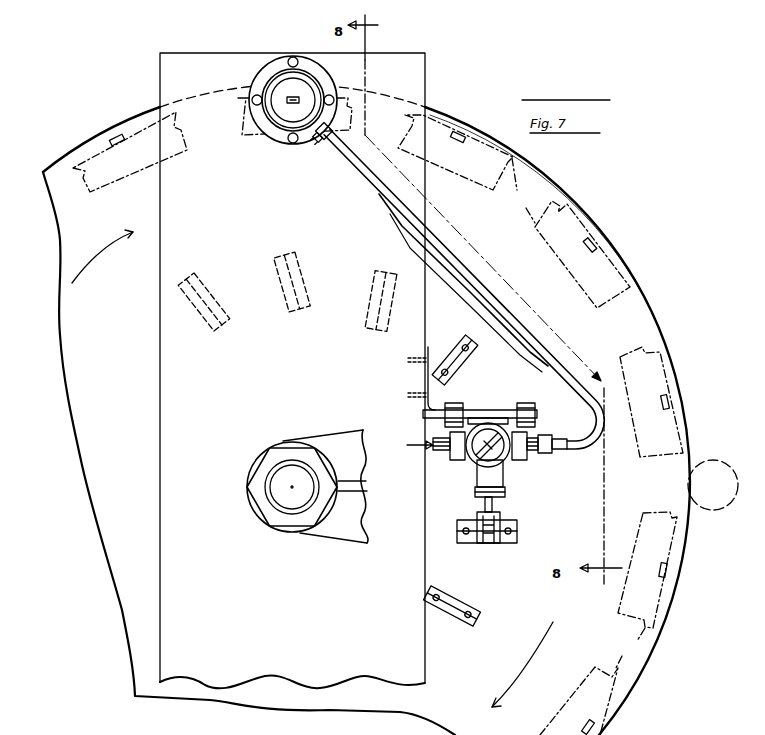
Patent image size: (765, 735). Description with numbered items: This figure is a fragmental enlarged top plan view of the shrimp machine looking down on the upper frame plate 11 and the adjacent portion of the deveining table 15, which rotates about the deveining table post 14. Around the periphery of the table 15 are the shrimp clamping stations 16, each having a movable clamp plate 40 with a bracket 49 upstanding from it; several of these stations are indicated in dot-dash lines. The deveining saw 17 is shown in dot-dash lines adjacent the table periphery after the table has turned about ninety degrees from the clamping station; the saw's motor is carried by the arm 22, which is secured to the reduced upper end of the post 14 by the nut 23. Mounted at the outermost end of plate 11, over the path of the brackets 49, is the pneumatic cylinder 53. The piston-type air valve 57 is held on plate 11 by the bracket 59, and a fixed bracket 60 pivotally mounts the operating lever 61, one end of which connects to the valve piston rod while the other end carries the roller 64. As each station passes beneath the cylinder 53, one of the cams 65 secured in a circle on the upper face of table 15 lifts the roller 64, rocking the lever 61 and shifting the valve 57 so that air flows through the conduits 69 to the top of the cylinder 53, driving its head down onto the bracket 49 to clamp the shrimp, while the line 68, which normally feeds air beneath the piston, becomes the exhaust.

The upper frame plate 11 is at (429, 62).
The deveining table post 14 is at (290, 487).
The deveining table 15 is at (545, 174).
The shrimp clamping stations 16 is at (142, 178).
The rotatable saw 17 is at (720, 457).
The arm 22 is at (350, 433).
The nut 23 is at (287, 525).
The movable clamp plate 40 is at (578, 413).
The bracket 49 is at (590, 248).
The pneumatic cylinder 53 is at (270, 70).
The air valve 57 is at (510, 462).
The bracket 59 is at (485, 410).
The fixed bracket 60 is at (483, 477).
The operating lever 61 is at (487, 506).
The roller 64 is at (489, 543).
The cams 65 is at (283, 285).
The air line 68 is at (410, 242).
The conduits 69 is at (363, 172).